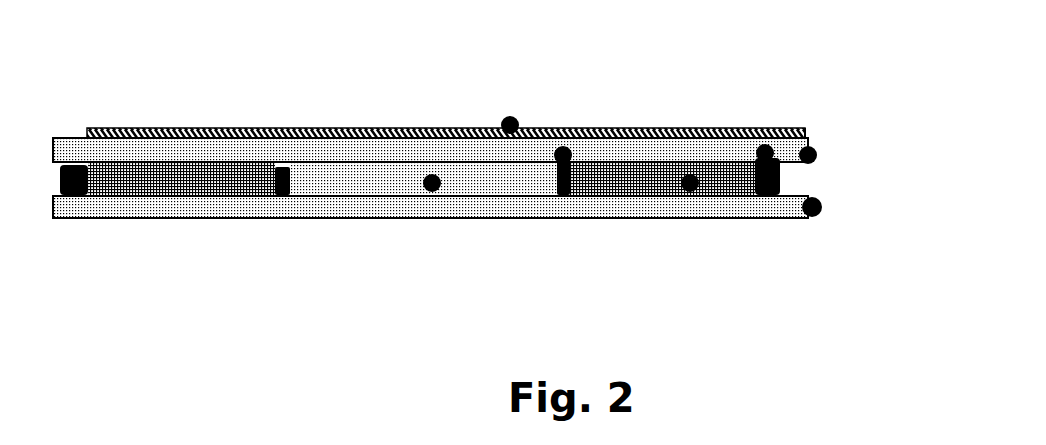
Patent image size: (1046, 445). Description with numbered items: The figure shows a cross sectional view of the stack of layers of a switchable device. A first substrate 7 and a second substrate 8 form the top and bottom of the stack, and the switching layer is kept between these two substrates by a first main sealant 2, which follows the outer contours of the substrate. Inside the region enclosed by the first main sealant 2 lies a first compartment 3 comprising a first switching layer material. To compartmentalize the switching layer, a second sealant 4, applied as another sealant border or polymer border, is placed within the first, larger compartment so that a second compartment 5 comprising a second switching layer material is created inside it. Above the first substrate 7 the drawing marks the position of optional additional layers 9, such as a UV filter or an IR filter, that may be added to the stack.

The first main sealant 2 is at (805, 132).
The first compartment comprising a first switching layer material 3 is at (692, 175).
The second sealant 4 is at (567, 147).
The second compartment comprising a second switching layer material 5 is at (433, 174).
The first substrate 7 is at (817, 155).
The second substrate 8 is at (822, 207).
The position of optional additional layers 9 is at (511, 116).